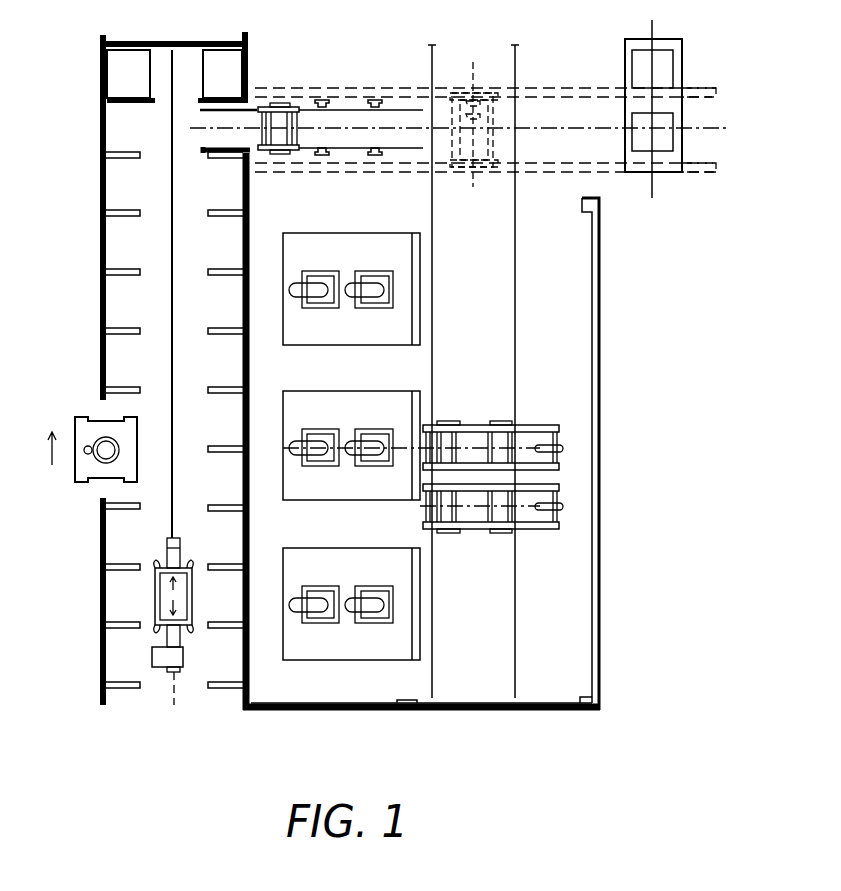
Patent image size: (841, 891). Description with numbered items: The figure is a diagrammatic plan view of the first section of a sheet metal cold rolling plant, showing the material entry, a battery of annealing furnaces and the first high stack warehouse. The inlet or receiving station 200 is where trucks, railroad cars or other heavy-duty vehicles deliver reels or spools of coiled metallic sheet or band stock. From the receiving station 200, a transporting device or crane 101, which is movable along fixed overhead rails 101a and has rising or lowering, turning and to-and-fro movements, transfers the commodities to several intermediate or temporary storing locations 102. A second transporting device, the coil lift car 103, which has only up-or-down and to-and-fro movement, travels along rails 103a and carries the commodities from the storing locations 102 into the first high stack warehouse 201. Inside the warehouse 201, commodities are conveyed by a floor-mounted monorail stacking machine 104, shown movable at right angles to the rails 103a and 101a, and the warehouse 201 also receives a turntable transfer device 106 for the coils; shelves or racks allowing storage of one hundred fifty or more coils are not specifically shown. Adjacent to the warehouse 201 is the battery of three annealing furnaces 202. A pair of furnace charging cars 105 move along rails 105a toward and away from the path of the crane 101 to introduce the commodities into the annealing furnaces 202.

The first high stack warehouse 201 is at (115, 131).
The rails 103a is at (205, 111).
The coil lift car 103 is at (270, 105).
The temporary storing locations 102 is at (376, 100).
The crane 101 is at (455, 95).
The fixed overhead rails 101a is at (696, 88).
The receiving station 200 is at (680, 106).
The annealing furnaces 202 is at (378, 218).
The rails 105a is at (434, 360).
The furnace charging cars 105 is at (567, 397).
The turntable transfer device 106 is at (82, 470).
The monorail stacking machine 104 is at (193, 610).